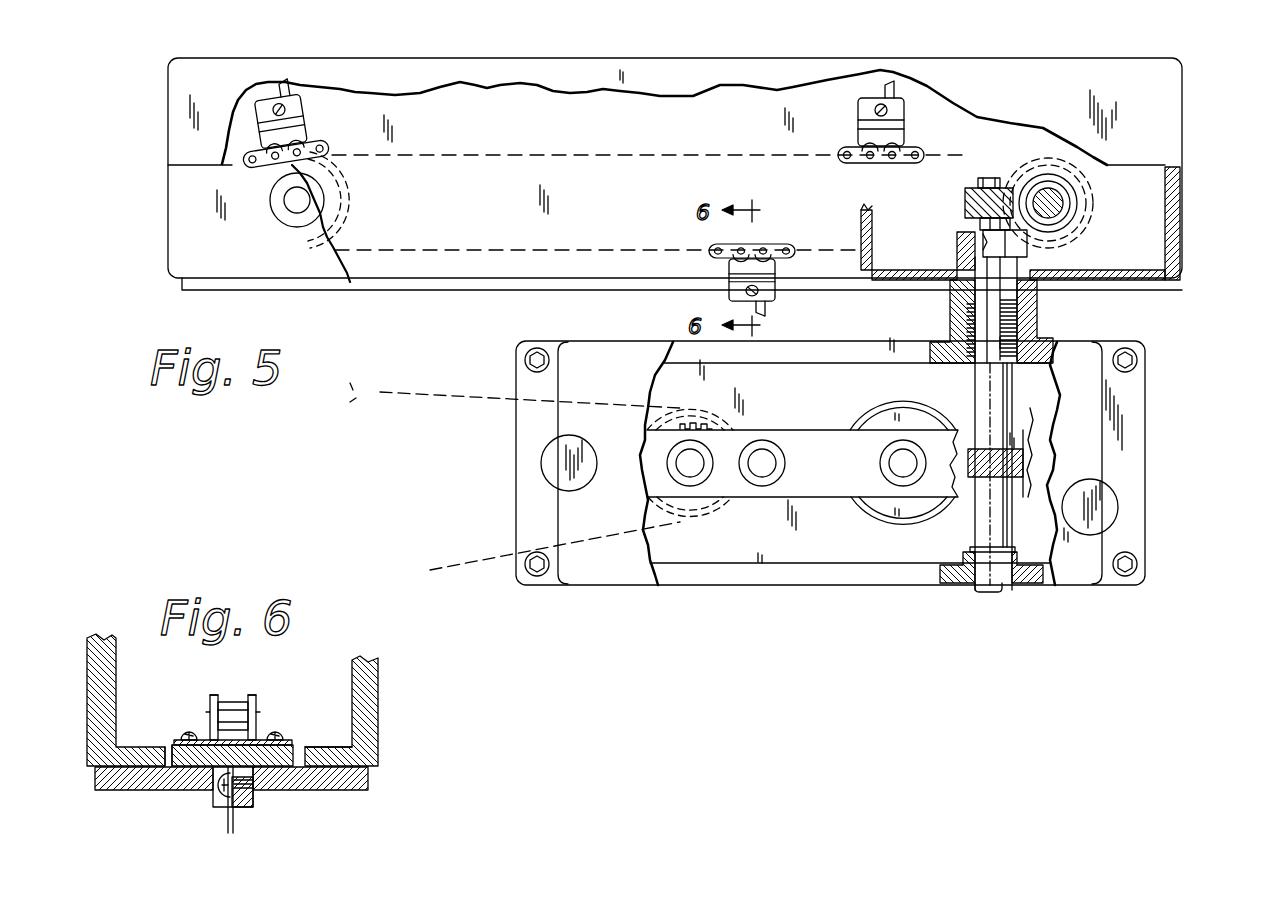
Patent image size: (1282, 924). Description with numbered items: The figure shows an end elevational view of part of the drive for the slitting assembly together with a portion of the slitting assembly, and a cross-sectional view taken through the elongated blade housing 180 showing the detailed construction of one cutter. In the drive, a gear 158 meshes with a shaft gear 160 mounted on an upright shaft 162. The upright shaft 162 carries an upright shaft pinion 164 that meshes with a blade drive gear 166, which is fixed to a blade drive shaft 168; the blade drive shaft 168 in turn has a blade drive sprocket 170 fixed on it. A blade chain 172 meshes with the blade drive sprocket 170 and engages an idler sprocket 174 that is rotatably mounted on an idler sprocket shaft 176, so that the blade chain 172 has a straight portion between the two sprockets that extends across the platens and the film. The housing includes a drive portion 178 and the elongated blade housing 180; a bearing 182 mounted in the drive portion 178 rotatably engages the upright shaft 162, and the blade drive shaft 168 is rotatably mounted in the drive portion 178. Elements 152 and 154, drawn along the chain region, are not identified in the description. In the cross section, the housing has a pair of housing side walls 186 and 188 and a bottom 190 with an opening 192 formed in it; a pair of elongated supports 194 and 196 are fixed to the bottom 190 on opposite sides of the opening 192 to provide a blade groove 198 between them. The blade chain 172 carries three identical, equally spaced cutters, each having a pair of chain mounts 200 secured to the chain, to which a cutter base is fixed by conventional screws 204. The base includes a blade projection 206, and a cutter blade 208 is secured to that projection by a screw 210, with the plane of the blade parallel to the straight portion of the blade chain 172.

In FIG. 5, the chain bar 152 is at (823, 430).
In FIG. 5, the roller 154 is at (886, 470).
In FIG. 5, the gear 158 is at (884, 522).
In FIG. 5, the shaft gear 160 is at (1013, 438).
In FIG. 5, the upright shaft 162 is at (977, 380).
In FIG. 5, the upright shaft pinion 164 is at (965, 202).
In FIG. 5, the blade drive gear 166 is at (1078, 192).
In FIG. 5, the blade drive shaft 168 is at (1062, 207).
In FIG. 5, the blade drive sprocket 170 is at (1018, 162).
In FIG. 5, the blade chain 172 is at (762, 152).
In FIG. 6, the blade chain 172 is at (232, 700).
In FIG. 5, the idler sprocket 174 is at (352, 184).
In FIG. 5, the idler sprocket shaft 176 is at (280, 222).
In FIG. 5, the drive portion 178 is at (1182, 186).
In FIG. 5, the elongated blade housing 180 is at (652, 58).
In FIG. 5, the bearing 182 is at (1018, 286).
In FIG. 6, the housing side wall 186 is at (145, 659).
In FIG. 6, the housing side wall 188 is at (378, 690).
In FIG. 6, the bottom 190 is at (332, 740).
In FIG. 6, the opening 192 is at (168, 750).
In FIG. 6, the elongated support 194 is at (167, 790).
In FIG. 6, the elongated support 196 is at (345, 790).
In FIG. 6, the blade groove 198 is at (213, 795).
In FIG. 6, the chain mount 200 is at (210, 700).
In FIG. 6, the screw 204 is at (187, 730).
In FIG. 6, the blade projection 206 is at (253, 793).
In FIG. 6, the cutter blade 208 is at (235, 826).
In FIG. 6, the screw 210 is at (226, 808).